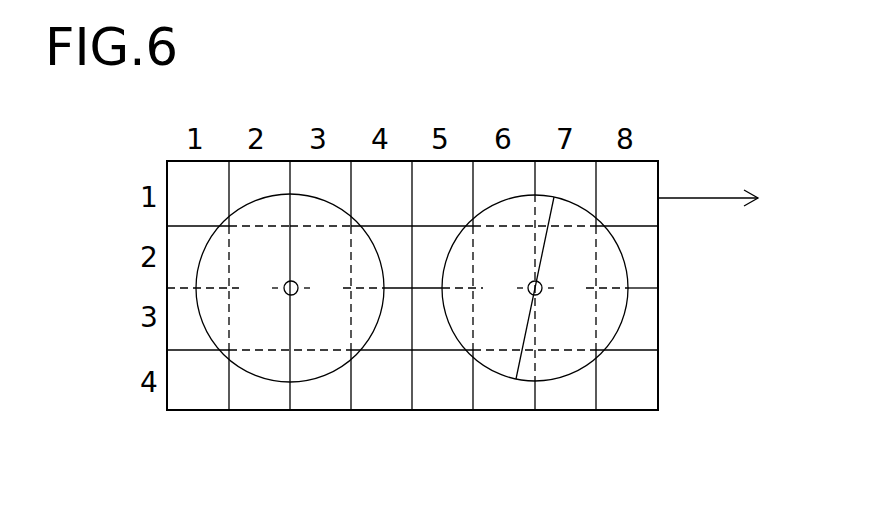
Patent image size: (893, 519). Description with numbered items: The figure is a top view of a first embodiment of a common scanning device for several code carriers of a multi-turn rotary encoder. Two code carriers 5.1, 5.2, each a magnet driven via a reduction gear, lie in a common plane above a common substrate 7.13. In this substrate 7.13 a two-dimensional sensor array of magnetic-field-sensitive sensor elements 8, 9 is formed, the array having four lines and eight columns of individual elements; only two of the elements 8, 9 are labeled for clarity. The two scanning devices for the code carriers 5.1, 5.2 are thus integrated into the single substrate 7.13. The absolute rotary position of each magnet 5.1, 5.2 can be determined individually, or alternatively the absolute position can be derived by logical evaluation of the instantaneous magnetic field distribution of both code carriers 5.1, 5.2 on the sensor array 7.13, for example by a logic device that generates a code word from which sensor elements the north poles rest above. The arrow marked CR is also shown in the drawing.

The code carrier 5.1 is at (313, 345).
The code carrier 5.2 is at (559, 353).
The common substrate 7.13 is at (659, 373).
The sensor element 8 is at (210, 178).
The sensor element 9 is at (275, 178).
The reading direction arrow CR is at (707, 198).